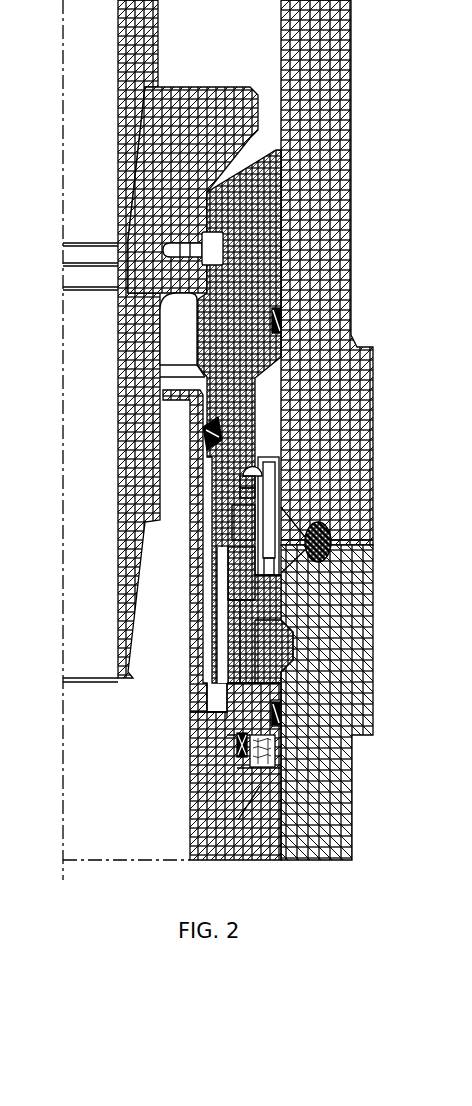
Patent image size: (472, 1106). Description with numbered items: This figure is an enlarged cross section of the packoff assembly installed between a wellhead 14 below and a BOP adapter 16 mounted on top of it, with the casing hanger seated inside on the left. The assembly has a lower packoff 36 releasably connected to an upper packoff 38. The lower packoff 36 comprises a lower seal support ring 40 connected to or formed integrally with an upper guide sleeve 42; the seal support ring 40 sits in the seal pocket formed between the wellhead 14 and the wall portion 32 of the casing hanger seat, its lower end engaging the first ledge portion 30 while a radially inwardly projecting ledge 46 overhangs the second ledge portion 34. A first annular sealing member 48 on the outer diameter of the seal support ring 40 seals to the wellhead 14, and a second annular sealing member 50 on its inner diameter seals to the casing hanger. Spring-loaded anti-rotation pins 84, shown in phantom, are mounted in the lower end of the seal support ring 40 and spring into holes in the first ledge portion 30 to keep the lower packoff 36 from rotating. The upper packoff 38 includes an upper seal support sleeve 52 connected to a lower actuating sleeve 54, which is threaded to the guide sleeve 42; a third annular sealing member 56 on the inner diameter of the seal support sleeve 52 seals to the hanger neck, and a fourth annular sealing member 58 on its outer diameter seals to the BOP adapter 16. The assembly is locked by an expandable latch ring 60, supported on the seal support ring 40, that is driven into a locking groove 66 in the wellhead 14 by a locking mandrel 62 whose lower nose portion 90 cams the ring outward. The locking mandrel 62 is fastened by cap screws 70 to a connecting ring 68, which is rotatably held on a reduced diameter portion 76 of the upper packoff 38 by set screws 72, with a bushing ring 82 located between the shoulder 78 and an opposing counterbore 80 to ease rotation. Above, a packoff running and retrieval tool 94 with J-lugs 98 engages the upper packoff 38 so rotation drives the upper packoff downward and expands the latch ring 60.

The wellhead 14 is at (375, 640).
The BOP adapter 16 is at (352, 134).
The first ledge portion 30 is at (246, 762).
The wall portion 32 is at (240, 718).
The second ledge portion 34 is at (215, 711).
The lower packoff 36 is at (293, 766).
The upper packoff 38 is at (290, 212).
The lower seal support ring 40 is at (278, 746).
The upper guide sleeve 42 is at (236, 640).
The radially inwardly projecting ledge 46 is at (215, 696).
The first annular sealing member 48 is at (281, 711).
The second annular sealing member 50 is at (240, 742).
The upper seal support sleeve 52 is at (280, 285).
The lower actuating sleeve 54 is at (200, 605).
The third annular sealing member 56 is at (214, 420).
The fourth annular sealing member 58 is at (284, 321).
The expandable latch ring 60 is at (290, 668).
The locking mandrel 62 is at (272, 598).
The locking groove 66 is at (289, 650).
The connecting ring 68 is at (285, 506).
The cap screws 70 is at (270, 484).
The set screws 72 is at (240, 522).
The reduced diameter portion 76 is at (232, 560).
The shoulder 78 is at (262, 462).
The counterbore 80 is at (243, 491).
The bushing ring 82 is at (245, 480).
The anti-rotation pins 84 is at (264, 780).
The lower nose portion 90 is at (252, 640).
The packoff running and retrieval tool 94 is at (240, 118).
The J-lugs 98 is at (215, 252).